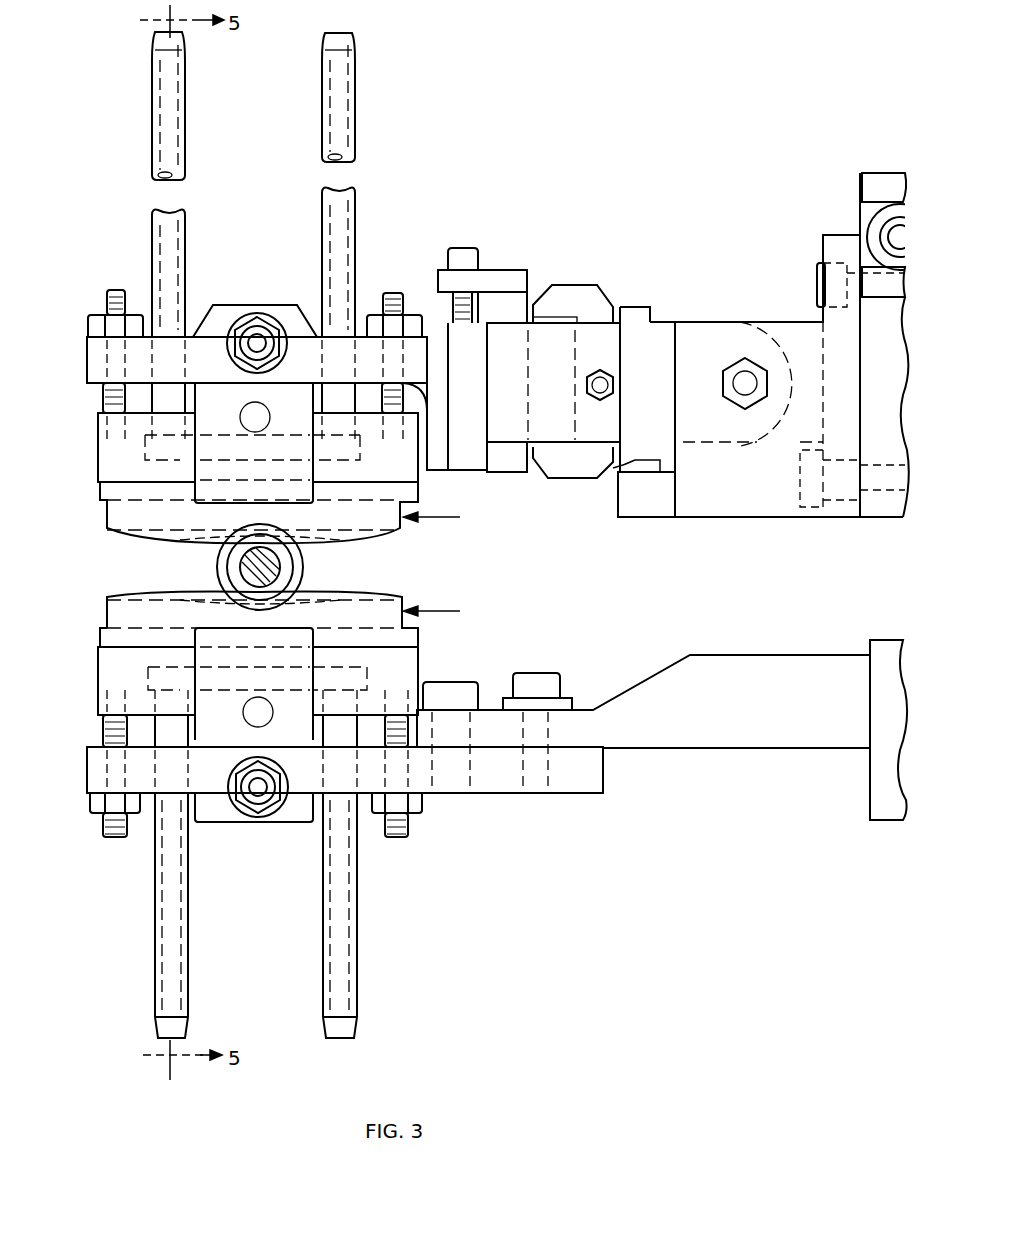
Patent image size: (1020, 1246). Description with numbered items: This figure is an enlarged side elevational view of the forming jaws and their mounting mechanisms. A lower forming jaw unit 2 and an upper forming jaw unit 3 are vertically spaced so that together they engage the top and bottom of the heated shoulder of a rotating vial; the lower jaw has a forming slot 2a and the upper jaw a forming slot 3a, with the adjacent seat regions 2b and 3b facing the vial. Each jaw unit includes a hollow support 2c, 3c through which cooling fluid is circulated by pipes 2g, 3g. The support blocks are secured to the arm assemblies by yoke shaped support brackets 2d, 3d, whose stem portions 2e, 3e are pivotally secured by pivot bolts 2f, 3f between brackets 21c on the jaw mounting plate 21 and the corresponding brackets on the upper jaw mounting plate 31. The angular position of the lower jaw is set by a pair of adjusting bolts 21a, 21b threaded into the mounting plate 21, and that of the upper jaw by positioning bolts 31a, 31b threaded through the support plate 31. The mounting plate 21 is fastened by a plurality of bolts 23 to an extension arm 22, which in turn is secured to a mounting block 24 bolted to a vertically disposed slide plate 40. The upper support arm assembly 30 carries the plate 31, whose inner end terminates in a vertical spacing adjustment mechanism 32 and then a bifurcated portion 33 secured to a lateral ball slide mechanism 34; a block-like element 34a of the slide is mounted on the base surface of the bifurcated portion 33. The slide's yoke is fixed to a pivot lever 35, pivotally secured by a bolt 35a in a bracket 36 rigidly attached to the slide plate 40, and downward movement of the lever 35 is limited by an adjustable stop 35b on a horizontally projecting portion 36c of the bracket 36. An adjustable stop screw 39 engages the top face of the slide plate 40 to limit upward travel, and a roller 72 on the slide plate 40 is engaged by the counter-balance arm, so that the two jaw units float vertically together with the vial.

The lower forming jaw unit 2 is at (439, 611).
The forming slot 2a is at (107, 600).
The lower clamp seat surface 2b is at (170, 594).
The hollow support 2c is at (107, 683).
The yoke shaped support bracket 2d is at (298, 672).
The stem portion 2e is at (222, 823).
The pivot bolt 2f is at (252, 800).
The cooling pipes 2g is at (322, 968).
The upper forming jaw unit 3 is at (439, 518).
The forming slot 3a is at (107, 527).
The upper clamp seat surface 3b is at (175, 537).
The hollow support 3c is at (107, 453).
The yoke shaped support bracket 3d is at (298, 447).
The stem portion 3e is at (293, 390).
The pivot bolt 3f is at (258, 312).
The cooling pipes 3g is at (322, 113).
The jaw mounting plate 21 is at (582, 793).
The adjusting bolt 21a is at (113, 837).
The adjusting bolt 21b is at (405, 837).
The bracket 21c is at (297, 823).
The extension arm 22 is at (707, 735).
The bolts 23 is at (517, 673).
The mounting block 24 is at (868, 790).
The upper support arm assembly 30 is at (665, 318).
The jaw mounting plate 31 is at (212, 336).
The positioning bolt 31a is at (110, 290).
The positioning bolt 31b is at (397, 292).
The vertical spacing adjustment mechanism 32 is at (492, 272).
The bifurcated portion 33 is at (598, 337).
The lateral ball slide mechanism 34 is at (568, 323).
The block-like element 34a is at (600, 380).
The pivot lever 35 is at (718, 447).
The pivot bolt 35a is at (750, 393).
The adjustable stop 35b is at (620, 470).
The bracket 36 is at (768, 520).
The horizontally projecting portion 36c is at (628, 503).
The adjustable stop screw 39 is at (817, 268).
The vertical slide plate 40 is at (872, 505).
The roller 72 is at (878, 222).